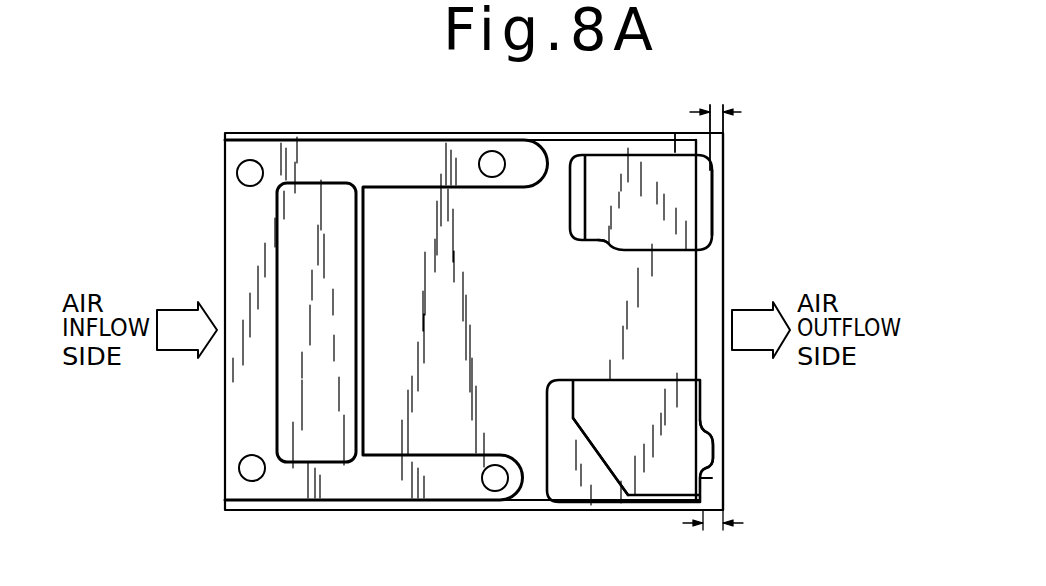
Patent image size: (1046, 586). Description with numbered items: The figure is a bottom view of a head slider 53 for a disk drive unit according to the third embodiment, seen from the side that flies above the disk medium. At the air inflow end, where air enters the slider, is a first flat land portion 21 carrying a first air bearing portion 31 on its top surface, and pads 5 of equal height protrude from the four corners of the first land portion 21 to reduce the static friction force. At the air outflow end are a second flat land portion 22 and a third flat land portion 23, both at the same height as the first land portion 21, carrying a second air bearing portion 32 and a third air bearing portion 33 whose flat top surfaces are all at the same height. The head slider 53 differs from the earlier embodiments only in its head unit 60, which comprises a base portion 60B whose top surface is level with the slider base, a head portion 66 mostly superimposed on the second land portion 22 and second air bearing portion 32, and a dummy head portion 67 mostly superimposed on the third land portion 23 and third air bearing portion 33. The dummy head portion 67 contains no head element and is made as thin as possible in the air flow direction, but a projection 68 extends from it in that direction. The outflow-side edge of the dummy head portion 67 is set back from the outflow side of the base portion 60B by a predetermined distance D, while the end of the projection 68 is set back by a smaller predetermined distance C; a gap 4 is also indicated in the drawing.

The head slider 53 is at (207, 196).
The pad 5 is at (251, 173).
The first flat land portion 21 is at (365, 232).
The first air bearing portion 31 is at (342, 307).
The second flat land portion 22 is at (567, 197).
The second air bearing portion 32 is at (625, 228).
The third flat land portion 23 is at (553, 410).
The third air bearing portion 33 is at (590, 400).
The gap 4 is at (716, 171).
The head portion 66 is at (715, 210).
The base portion 60B is at (723, 260).
The head unit 60 is at (724, 388).
The projection 68 is at (707, 442).
The dummy head portion 67 is at (707, 477).
The predetermined distance C is at (740, 95).
The predetermined distance D is at (705, 530).